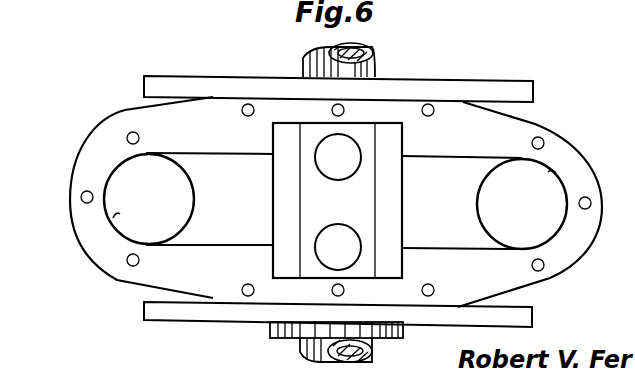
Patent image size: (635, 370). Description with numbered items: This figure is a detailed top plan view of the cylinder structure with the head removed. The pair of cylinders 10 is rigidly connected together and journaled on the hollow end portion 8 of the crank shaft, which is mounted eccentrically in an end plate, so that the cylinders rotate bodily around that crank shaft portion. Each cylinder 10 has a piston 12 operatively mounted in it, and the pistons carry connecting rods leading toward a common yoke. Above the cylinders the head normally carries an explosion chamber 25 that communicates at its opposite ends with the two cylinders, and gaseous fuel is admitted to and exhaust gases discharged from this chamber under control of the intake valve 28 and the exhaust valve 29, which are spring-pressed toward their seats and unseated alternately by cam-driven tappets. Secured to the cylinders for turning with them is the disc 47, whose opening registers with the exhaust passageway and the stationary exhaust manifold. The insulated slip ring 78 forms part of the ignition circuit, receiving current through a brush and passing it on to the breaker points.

The crank shaft end portion 8 is at (372, 67).
The cylinder 10 is at (118, 177).
The piston 12 is at (115, 217).
The explosion chamber 25 is at (200, 170).
The intake valve 28 is at (353, 255).
The exhaust valve 29 is at (350, 143).
The disc 47 is at (497, 83).
The insulated slip ring 78 is at (383, 342).